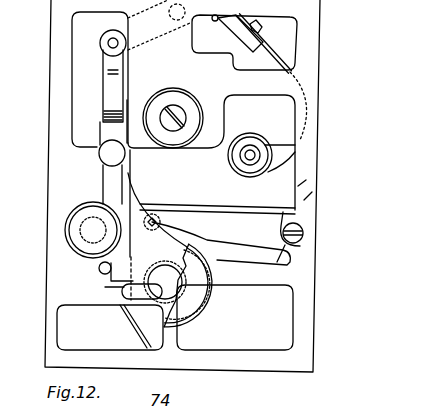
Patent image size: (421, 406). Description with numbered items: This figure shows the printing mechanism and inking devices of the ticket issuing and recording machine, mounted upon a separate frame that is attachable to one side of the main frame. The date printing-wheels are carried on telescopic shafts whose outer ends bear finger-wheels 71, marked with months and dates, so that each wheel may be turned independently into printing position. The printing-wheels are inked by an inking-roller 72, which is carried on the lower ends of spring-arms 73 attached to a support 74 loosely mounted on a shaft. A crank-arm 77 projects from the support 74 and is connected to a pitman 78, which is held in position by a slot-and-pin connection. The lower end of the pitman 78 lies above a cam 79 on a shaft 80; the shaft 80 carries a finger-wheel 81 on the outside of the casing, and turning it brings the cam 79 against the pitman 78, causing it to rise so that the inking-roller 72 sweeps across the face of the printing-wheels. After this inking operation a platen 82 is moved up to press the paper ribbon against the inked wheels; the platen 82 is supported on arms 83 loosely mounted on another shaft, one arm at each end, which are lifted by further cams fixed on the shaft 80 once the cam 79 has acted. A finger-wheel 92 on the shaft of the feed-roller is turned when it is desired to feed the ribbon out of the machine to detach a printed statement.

The finger-wheel 71 is at (193, 107).
The inking-roller 72 is at (243, 170).
The spring-arms 73 is at (273, 58).
The support 74 is at (233, 38).
The crank-arm 77 is at (104, 30).
The pitman 78 is at (116, 83).
The cam 79 is at (123, 290).
The shaft 80 is at (178, 285).
The finger-wheel 81 is at (235, 317).
The platen 82 is at (153, 217).
The arms 83 is at (215, 239).
The finger-wheel 92 is at (76, 250).